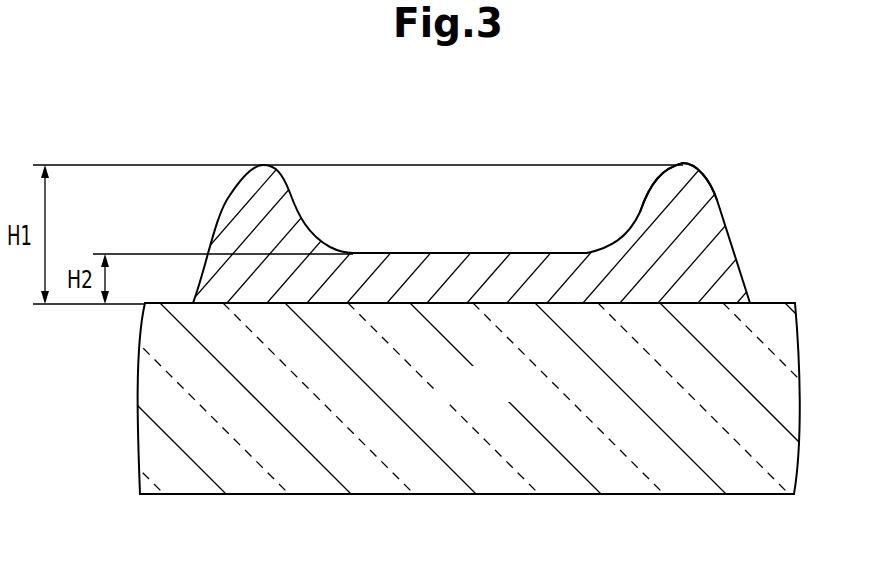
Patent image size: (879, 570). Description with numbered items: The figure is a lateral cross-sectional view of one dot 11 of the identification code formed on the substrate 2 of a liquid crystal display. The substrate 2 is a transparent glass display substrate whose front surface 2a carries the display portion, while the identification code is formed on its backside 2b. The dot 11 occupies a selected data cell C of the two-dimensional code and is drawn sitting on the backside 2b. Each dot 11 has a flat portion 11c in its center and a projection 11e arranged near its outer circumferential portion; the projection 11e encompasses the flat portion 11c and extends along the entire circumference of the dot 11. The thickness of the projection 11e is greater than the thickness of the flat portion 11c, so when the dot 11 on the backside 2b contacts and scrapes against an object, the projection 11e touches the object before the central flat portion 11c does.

The substrate 2 is at (799, 393).
The surface 2a is at (777, 496).
The backside 2b is at (783, 302).
The dot 11 is at (712, 199).
The projection 11e is at (677, 163).
The flat portion 11c is at (495, 252).
The data cell C is at (476, 327).